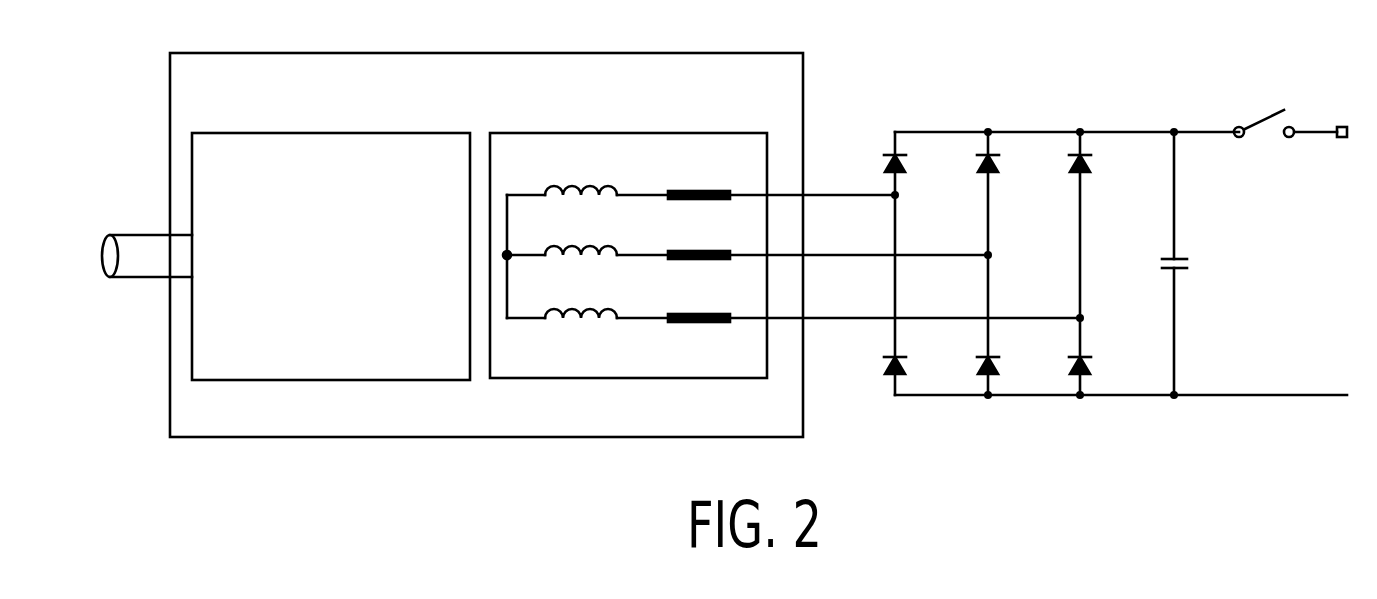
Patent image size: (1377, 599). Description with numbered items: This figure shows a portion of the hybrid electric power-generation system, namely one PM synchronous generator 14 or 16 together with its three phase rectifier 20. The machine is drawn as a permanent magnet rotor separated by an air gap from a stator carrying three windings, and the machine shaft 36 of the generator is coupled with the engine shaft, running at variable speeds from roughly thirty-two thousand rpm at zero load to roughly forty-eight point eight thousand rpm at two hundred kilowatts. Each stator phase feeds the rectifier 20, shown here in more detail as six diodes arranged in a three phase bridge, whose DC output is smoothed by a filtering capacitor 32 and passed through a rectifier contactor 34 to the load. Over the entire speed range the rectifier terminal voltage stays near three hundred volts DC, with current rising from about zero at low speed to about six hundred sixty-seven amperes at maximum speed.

The electric machine 14 is at (551, 232).
The electric machine 16 is at (158, 68).
The three phase rectifier 20 is at (1120, 221).
The filtering capacitor 32 is at (1215, 264).
The rectifier contactor 34 is at (1265, 158).
The machine shaft 36 is at (152, 257).